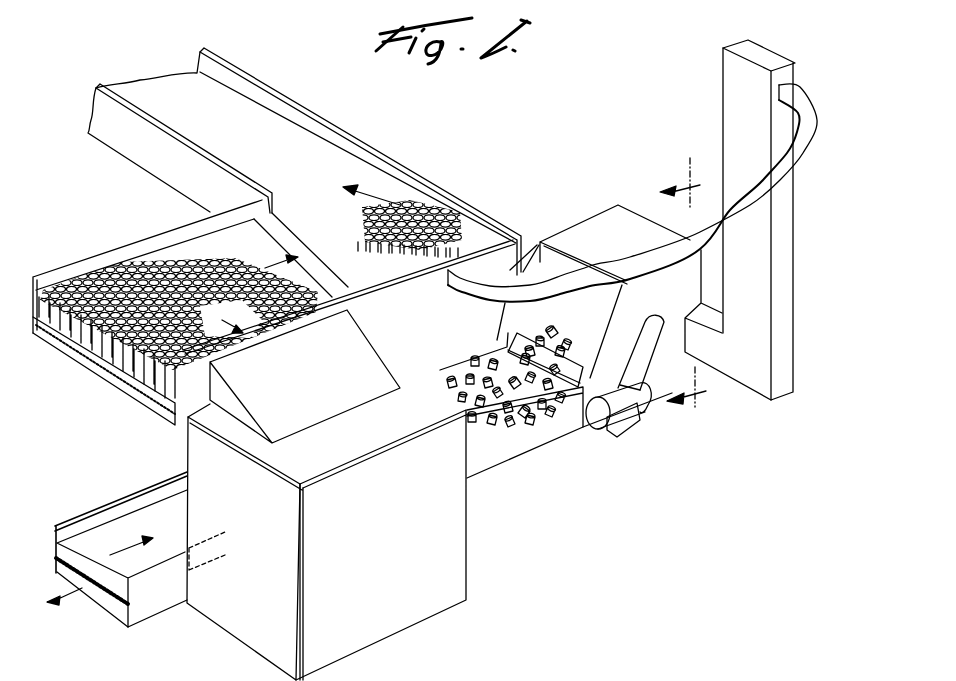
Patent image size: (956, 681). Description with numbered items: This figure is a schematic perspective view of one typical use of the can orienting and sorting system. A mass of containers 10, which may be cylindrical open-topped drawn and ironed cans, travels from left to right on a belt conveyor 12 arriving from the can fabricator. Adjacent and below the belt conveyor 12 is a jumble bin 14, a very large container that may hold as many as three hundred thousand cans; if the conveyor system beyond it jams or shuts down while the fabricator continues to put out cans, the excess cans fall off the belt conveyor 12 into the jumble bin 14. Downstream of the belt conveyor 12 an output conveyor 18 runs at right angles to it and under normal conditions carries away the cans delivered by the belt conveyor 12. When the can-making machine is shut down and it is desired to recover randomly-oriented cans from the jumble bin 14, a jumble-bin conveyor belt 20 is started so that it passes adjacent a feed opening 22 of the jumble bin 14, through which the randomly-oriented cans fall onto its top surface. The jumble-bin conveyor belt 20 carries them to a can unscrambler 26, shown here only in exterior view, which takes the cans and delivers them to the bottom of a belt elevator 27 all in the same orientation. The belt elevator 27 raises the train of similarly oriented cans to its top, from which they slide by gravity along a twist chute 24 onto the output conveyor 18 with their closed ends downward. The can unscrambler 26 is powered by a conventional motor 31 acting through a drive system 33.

The containers 10 is at (140, 258).
The belt conveyor 12 is at (118, 352).
The jumble bin 14 is at (487, 557).
The output conveyor 18 is at (163, 88).
The jumble-bin conveyor belt 20 is at (113, 535).
The feed opening 22 is at (216, 542).
The twist chute 24 is at (793, 167).
The can unscrambler 26 is at (560, 234).
The belt elevator 27 is at (785, 268).
The motor 31 is at (630, 417).
The drive system 33 is at (650, 318).